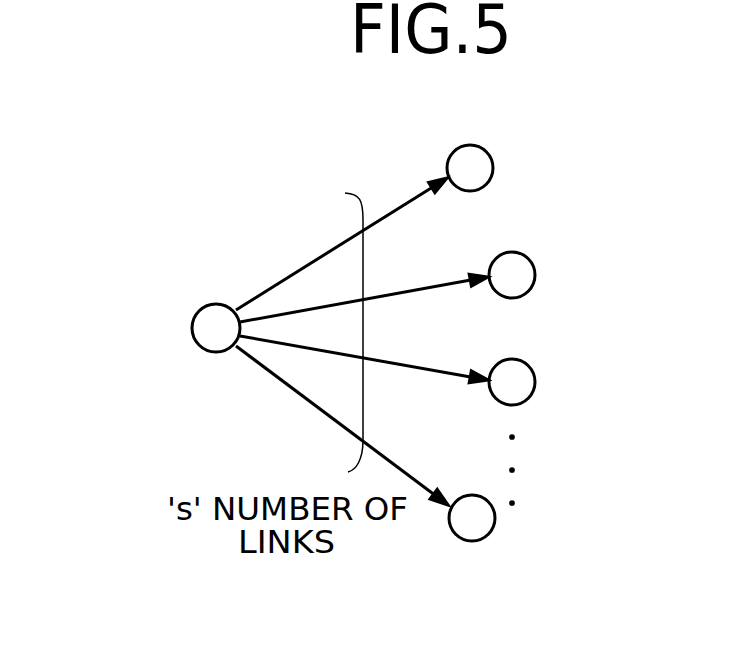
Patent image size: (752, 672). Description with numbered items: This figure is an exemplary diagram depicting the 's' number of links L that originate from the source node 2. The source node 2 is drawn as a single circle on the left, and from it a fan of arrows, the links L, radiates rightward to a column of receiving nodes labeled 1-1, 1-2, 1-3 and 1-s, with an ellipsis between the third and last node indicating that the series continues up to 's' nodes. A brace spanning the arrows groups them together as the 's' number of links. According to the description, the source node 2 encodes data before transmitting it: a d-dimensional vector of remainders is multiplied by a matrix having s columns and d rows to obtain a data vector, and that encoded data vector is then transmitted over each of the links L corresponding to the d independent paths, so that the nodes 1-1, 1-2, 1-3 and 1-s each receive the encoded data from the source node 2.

The source node 2 is at (218, 304).
The links L is at (312, 262).
The destination node 1 1-1 is at (494, 168).
The destination node 2 1-2 is at (536, 275).
The destination node 3 1-3 is at (536, 382).
The destination node s 1-s is at (496, 518).